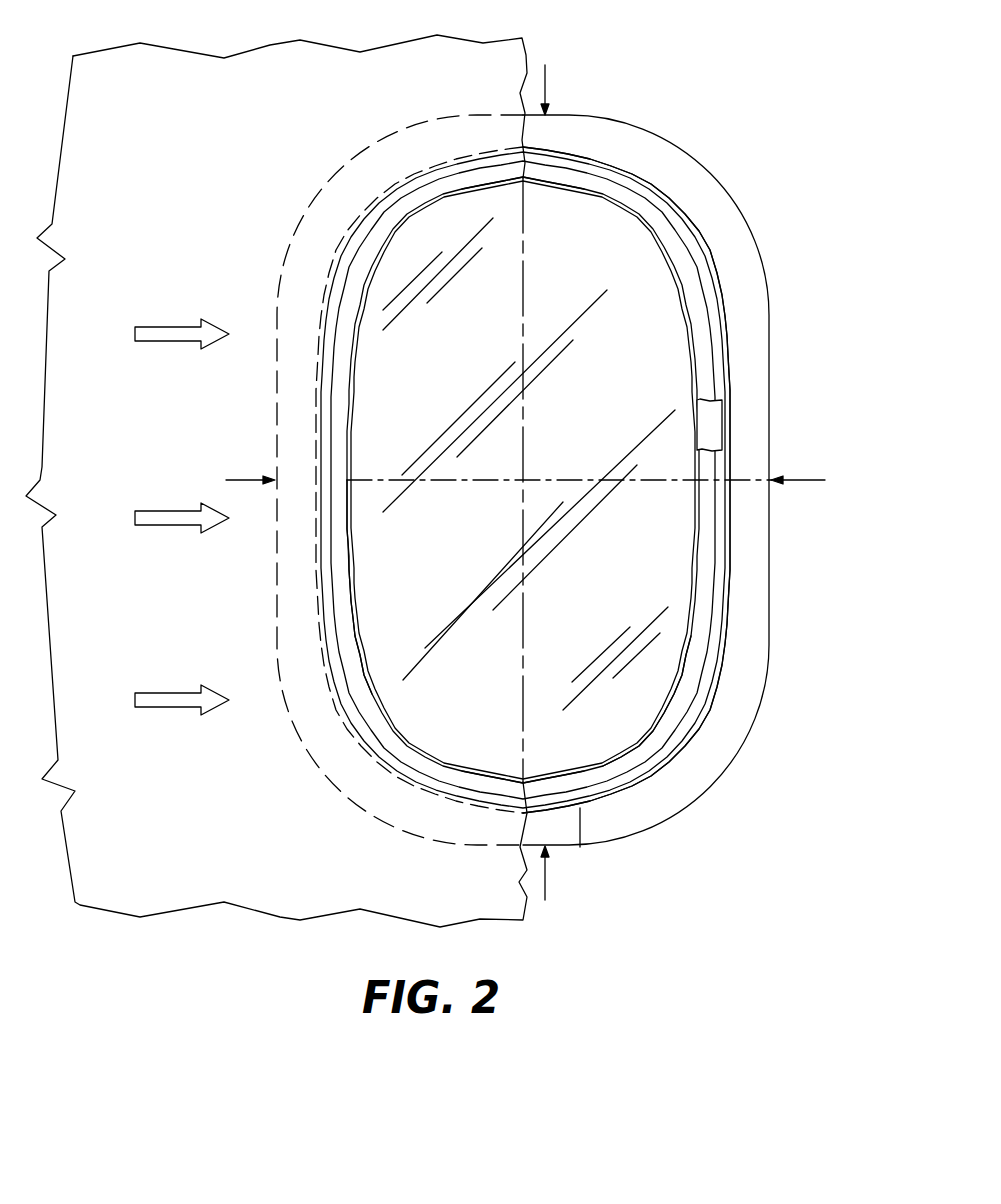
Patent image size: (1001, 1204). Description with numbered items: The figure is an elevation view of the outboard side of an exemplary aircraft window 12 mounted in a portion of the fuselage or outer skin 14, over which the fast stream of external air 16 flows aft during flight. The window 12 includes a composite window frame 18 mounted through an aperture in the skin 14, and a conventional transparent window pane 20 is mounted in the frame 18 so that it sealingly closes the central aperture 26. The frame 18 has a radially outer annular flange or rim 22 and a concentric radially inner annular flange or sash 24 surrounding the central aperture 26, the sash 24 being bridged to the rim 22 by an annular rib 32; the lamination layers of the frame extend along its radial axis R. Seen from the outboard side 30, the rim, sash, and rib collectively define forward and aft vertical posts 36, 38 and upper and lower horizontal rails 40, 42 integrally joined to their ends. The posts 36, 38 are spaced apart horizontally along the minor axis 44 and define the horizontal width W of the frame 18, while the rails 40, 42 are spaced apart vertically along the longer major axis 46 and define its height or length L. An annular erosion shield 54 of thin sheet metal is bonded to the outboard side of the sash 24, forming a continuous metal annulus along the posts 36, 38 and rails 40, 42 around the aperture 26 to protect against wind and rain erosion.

The window 12 is at (331, 717).
The fuselage or outer skin 14 is at (211, 857).
The external air 16 is at (168, 526).
The composite window frame 18 is at (682, 138).
The window pane 20 is at (617, 388).
The rim 22 is at (635, 826).
The sash 24 is at (710, 427).
The central aperture 26 is at (398, 737).
The outboard side 30 is at (697, 762).
The annular rib 32 is at (581, 850).
The forward post 36 is at (345, 449).
The aft post 38 is at (692, 502).
The upper rail 40 is at (482, 180).
The lower rail 42 is at (503, 772).
The minor axis 44 is at (452, 480).
The major axis 46 is at (523, 436).
The erosion shield 54 is at (359, 632).
The horizontal width W is at (238, 480).
The length L is at (547, 80).
The radial axis R is at (657, 706).